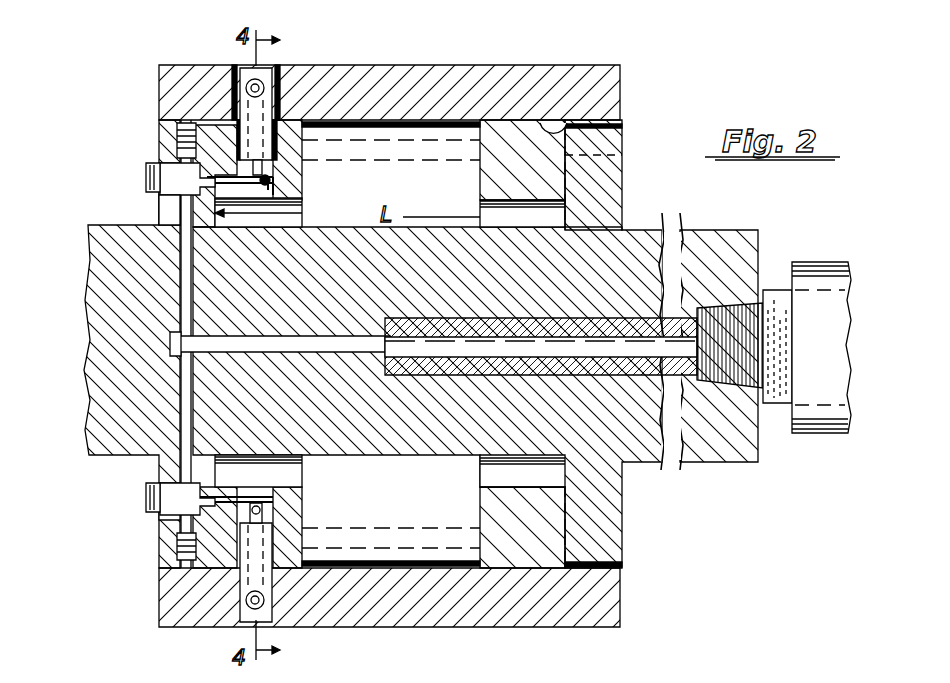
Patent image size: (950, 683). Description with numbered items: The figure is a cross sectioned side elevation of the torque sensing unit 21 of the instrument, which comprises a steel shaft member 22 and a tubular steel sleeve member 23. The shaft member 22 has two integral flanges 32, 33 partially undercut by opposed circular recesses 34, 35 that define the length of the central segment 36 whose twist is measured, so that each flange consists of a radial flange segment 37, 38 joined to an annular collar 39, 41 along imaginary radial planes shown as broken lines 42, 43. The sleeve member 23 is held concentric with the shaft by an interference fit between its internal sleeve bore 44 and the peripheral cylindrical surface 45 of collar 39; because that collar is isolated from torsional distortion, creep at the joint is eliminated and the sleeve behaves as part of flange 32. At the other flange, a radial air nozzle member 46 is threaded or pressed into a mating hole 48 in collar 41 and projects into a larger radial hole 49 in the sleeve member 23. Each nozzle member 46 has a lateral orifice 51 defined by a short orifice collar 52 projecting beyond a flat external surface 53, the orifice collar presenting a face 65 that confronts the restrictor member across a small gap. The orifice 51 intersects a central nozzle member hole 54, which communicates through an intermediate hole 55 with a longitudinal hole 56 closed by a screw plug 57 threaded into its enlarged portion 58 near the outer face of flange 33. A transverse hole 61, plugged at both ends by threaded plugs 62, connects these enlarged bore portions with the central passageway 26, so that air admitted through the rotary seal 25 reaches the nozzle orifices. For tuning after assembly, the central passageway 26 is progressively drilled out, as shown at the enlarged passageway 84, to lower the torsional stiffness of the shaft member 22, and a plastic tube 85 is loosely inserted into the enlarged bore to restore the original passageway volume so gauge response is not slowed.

The torque sensing unit 21 is at (690, 80).
The shaft member 22 is at (92, 457).
The sleeve member 23 is at (451, 70).
The rotary seal 25 is at (820, 264).
The central passageway 26 is at (626, 353).
The flange 32 is at (623, 168).
The flange 33 is at (172, 126).
The circular recess 34 is at (482, 216).
The circular recess 35 is at (302, 214).
The central segment 36 is at (427, 230).
The radial flange segment 37 is at (598, 212).
The radial flange segment 38 is at (172, 205).
The annular collar 39 is at (516, 133).
The annular collar 41 is at (304, 128).
The broken line 42 is at (622, 143).
The broken line 43 is at (215, 190).
The internal sleeve bore 44 is at (558, 137).
The peripheral cylindrical surface 45 is at (540, 138).
The radial air nozzle member 46 is at (237, 78).
The mating hole 48 is at (242, 142).
The radial hole 49 is at (233, 116).
The lateral orifice 51 is at (244, 70).
The orifice collar 52 is at (256, 79).
The flat external surface 53 is at (282, 120).
The central nozzle member hole 54 is at (238, 92).
The intermediate hole 55 is at (262, 165).
The longitudinal hole 56 is at (270, 179).
The screw plug 57 is at (152, 192).
The enlarged portion 58 is at (165, 178).
The transverse hole 61 is at (182, 368).
The threaded plug 62 is at (183, 141).
The face 65 is at (262, 79).
The enlarged passageway 84 is at (436, 378).
The plastic tube 85 is at (402, 378).